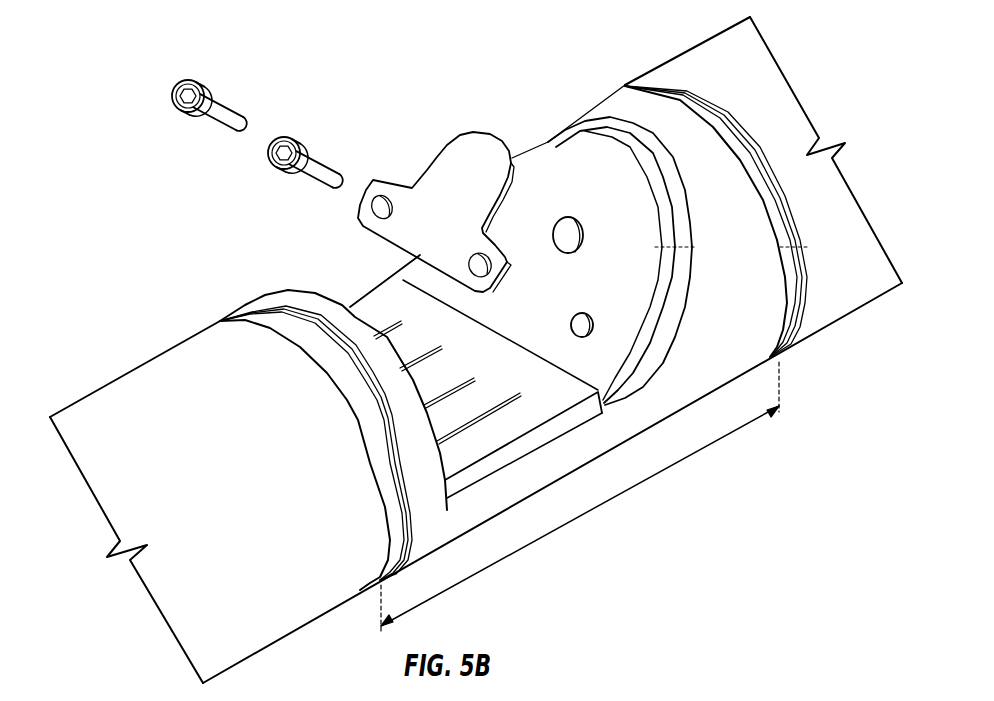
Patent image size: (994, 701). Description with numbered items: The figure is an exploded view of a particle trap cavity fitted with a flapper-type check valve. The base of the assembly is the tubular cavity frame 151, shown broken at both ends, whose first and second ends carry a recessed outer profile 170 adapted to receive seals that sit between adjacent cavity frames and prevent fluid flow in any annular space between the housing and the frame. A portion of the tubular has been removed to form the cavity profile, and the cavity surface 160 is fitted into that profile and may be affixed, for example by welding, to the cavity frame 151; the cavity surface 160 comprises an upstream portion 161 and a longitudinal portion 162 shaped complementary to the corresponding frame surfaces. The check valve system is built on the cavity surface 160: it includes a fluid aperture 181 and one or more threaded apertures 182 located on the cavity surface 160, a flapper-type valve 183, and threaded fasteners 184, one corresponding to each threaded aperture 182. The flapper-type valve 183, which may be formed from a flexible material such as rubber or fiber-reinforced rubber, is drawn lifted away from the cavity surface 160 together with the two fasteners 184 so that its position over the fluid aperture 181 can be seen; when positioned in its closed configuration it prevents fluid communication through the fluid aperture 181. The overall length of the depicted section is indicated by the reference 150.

The conduit body 150 is at (579, 519).
The cavity frame 151 is at (611, 109).
The cavity surface 160 is at (380, 300).
The upstream portion 161 is at (542, 162).
The longitudinal portion 162 is at (350, 308).
The recessed outer profile 170 is at (625, 83).
The fluid aperture 181 is at (580, 240).
The threaded apertures 182 is at (580, 313).
The flapper-type valve 183 is at (441, 173).
The threaded fasteners 184 is at (206, 87).